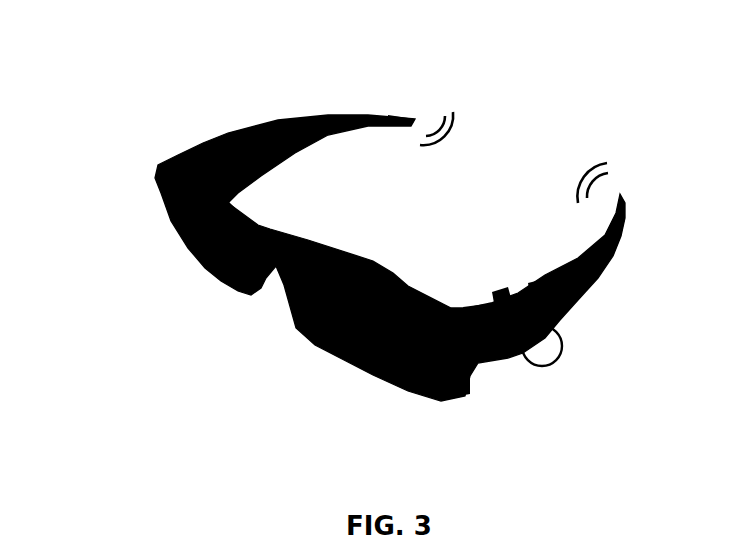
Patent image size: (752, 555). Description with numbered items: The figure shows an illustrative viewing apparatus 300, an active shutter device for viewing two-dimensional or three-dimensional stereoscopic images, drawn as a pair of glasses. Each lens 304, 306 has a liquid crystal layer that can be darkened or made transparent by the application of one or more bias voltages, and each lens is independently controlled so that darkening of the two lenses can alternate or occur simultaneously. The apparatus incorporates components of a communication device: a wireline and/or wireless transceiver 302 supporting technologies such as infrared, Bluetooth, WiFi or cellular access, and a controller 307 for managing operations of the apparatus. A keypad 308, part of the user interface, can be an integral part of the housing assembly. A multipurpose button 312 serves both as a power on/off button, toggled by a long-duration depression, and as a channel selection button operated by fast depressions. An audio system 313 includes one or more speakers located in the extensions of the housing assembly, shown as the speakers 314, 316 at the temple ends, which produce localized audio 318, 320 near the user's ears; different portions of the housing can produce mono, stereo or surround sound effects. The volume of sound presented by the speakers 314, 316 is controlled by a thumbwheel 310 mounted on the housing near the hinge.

The viewing apparatus 300 is at (378, 267).
The transceiver 302 is at (168, 107).
The lens 304 is at (183, 202).
The lens 306 is at (350, 318).
The controller 307 is at (462, 296).
The keypad 308 is at (457, 371).
The thumbwheel 310 is at (550, 347).
The multipurpose button 312 is at (528, 281).
The audio system 313 is at (491, 285).
The speaker 314 is at (617, 200).
The speaker 316 is at (399, 110).
The localized audio 318 is at (443, 125).
The localized audio 320 is at (580, 152).